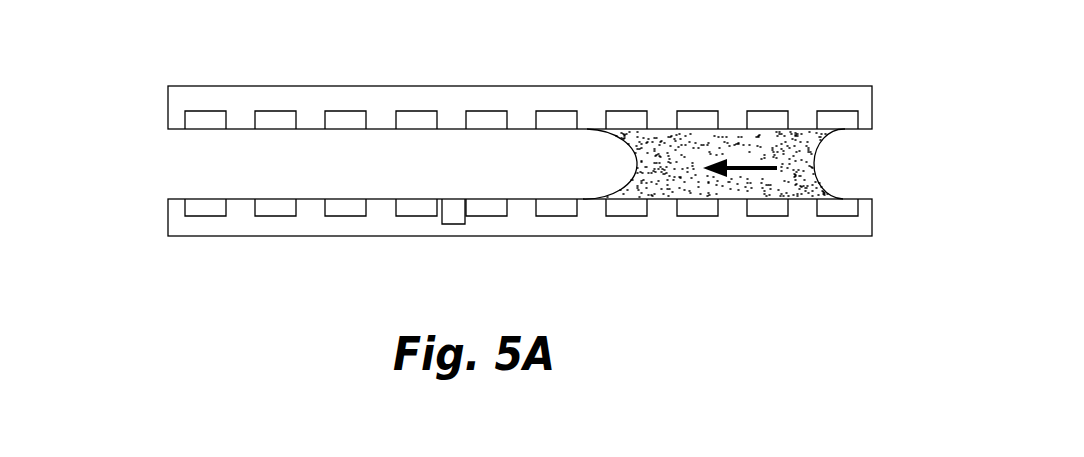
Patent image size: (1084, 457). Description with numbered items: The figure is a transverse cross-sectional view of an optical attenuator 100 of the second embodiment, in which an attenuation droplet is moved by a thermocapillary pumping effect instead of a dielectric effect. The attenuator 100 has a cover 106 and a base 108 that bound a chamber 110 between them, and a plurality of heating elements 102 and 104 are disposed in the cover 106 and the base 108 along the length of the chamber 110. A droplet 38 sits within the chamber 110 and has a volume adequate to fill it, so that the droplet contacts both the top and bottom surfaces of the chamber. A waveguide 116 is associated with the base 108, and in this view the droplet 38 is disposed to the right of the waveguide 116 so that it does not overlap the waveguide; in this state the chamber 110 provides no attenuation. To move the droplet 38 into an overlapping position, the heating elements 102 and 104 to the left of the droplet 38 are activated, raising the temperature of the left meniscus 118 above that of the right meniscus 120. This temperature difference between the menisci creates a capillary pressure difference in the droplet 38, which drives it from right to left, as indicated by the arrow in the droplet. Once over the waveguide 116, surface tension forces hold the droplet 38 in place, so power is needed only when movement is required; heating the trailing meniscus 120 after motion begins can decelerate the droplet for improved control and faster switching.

The optical attenuator 100 is at (517, 149).
The heating elements 102 is at (355, 118).
The heating elements 104 is at (705, 208).
The cover 106 is at (653, 97).
The base 108 is at (305, 223).
The chamber 110 is at (160, 146).
The waveguide 116 is at (458, 215).
The left meniscus 118 is at (620, 185).
The right meniscus 120 is at (818, 165).
The droplet 38 is at (827, 182).